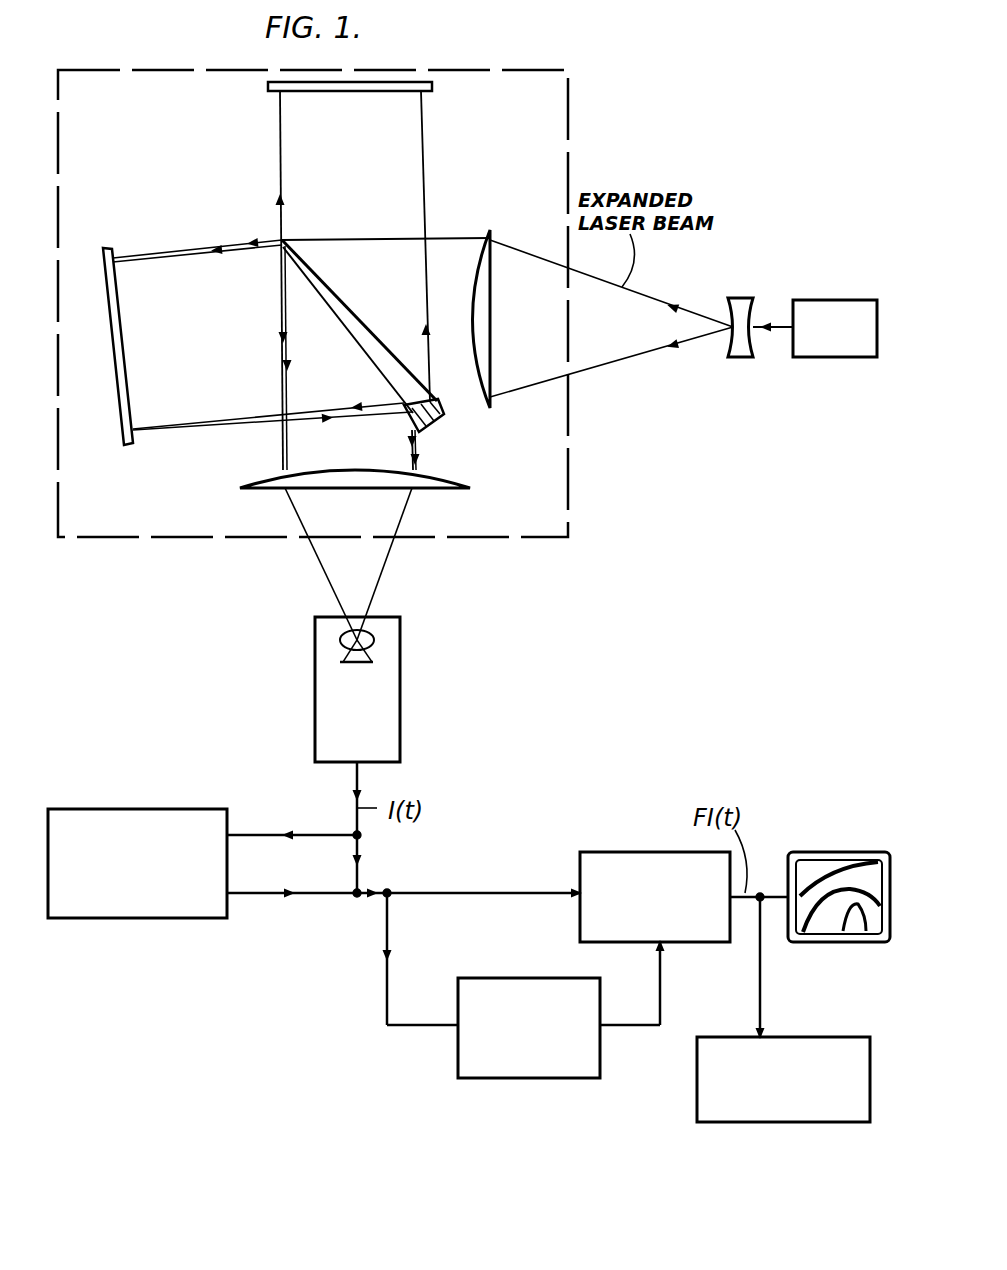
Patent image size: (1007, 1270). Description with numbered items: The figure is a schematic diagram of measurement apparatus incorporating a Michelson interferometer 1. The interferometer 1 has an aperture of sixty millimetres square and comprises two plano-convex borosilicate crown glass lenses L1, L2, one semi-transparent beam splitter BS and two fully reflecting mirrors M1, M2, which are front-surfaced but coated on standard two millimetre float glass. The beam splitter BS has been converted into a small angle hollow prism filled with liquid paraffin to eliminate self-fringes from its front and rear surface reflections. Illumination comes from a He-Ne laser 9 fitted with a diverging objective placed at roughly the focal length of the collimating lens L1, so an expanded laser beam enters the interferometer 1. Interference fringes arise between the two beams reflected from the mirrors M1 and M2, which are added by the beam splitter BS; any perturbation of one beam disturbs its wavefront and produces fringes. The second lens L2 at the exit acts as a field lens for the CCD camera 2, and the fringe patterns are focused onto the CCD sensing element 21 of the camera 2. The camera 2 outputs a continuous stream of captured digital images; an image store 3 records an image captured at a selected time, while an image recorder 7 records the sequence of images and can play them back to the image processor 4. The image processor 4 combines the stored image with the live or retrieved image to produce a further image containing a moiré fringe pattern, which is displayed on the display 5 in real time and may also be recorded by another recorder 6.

The Michelson interferometer 1 is at (568, 88).
The CCD camera 2 is at (387, 686).
The CCD sensing element 21 is at (351, 666).
The image store 3 is at (458, 1056).
The image processor 4 is at (600, 852).
The display 5 is at (813, 852).
The recorder 6 is at (697, 1094).
The image recorder 7 is at (108, 918).
The He-Ne laser 9 is at (818, 300).
The fully reflecting mirror M1 is at (350, 101).
The fully reflecting mirror M2 is at (135, 346).
The semi-transparent beam splitter BS is at (363, 336).
The collimating lens L1 is at (479, 303).
The field lens L2 is at (332, 477).